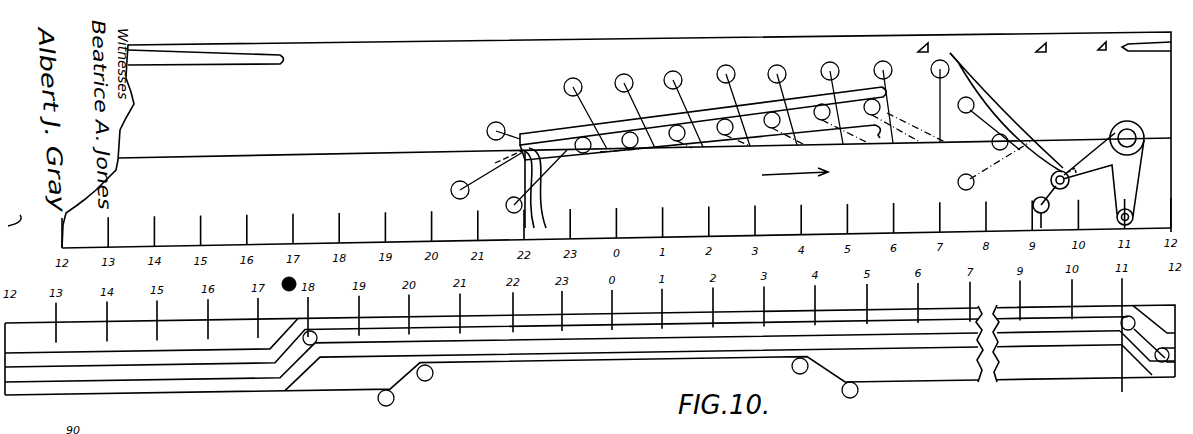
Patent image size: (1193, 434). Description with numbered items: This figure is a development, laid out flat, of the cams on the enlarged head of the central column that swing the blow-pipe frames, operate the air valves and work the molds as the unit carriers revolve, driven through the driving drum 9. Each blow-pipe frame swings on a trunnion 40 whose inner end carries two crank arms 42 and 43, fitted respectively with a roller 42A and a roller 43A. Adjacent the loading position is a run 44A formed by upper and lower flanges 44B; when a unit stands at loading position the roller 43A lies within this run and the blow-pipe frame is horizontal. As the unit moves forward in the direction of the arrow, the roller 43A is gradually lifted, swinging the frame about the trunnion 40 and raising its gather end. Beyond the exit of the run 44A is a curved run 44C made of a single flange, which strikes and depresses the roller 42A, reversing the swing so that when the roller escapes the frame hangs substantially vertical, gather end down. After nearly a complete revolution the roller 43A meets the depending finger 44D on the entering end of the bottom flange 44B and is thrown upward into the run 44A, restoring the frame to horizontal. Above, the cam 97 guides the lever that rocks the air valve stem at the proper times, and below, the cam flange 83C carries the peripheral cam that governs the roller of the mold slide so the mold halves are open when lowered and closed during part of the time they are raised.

The driving drum 9 is at (616, 140).
The cam 97 is at (223, 62).
The cam run 44A is at (703, 128).
The upper and lower flanges 44B is at (660, 140).
The curved cam run 44C is at (988, 106).
The depending finger 44D is at (540, 214).
The trunnion 40 is at (1128, 129).
The crank arm 42 is at (1100, 149).
The roller 42A is at (1066, 185).
The crank arm 43 is at (1128, 173).
The roller 43A is at (1117, 217).
The cam flange 83C is at (643, 303).